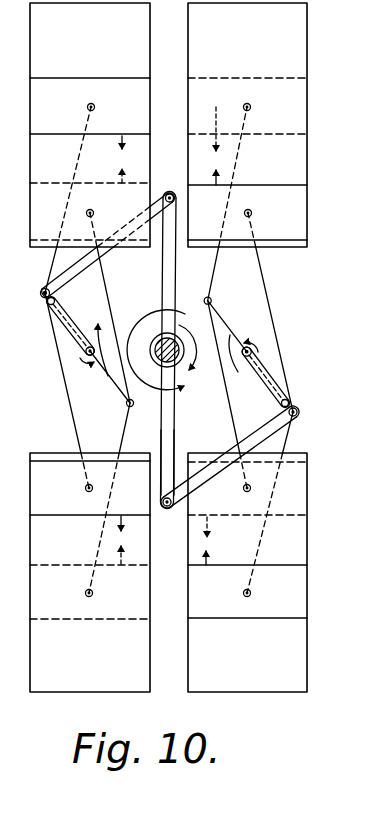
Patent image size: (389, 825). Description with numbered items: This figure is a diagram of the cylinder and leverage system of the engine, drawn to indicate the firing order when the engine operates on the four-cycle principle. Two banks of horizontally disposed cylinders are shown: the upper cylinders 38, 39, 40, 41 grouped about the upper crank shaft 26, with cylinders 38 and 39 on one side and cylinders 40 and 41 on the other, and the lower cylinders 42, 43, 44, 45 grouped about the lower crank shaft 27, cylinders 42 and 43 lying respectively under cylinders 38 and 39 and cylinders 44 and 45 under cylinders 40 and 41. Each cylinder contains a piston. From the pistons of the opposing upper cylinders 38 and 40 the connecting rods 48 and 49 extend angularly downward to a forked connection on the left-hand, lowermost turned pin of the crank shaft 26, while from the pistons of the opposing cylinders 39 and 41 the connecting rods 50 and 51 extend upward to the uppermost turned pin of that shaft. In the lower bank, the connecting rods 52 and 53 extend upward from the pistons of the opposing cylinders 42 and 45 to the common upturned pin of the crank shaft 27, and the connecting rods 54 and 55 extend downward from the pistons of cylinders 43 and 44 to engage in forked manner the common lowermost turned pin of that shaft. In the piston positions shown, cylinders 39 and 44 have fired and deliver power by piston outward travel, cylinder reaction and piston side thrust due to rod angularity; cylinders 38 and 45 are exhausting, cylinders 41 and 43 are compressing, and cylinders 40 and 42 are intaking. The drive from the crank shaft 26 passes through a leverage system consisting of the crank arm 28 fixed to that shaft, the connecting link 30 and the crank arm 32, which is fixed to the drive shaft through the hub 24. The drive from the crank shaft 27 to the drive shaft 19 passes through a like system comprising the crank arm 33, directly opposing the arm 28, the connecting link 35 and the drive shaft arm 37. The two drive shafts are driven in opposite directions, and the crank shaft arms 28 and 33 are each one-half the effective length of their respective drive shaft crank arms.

The drive shaft 19 is at (161, 350).
The hub 24 is at (177, 340).
The crank shaft 26 is at (99, 331).
The crank shaft 27 is at (264, 386).
The crank arm 28 is at (41, 301).
The connecting link 30 is at (73, 272).
The crank arm 32 is at (165, 273).
The crank arm 33 is at (283, 366).
The connecting link 35 is at (272, 423).
The drive shaft arm 37 is at (170, 432).
The upper cylinder 38 is at (90, 488).
The upper cylinder 39 is at (90, 593).
The upper cylinder 40 is at (90, 106).
The upper cylinder 41 is at (90, 211).
The lower cylinder 42 is at (247, 592).
The lower cylinder 43 is at (247, 488).
The lower cylinder 44 is at (247, 106).
The lower cylinder 45 is at (247, 212).
The connecting rod 48 is at (71, 406).
The connecting rod 49 is at (57, 260).
The connecting rod 50 is at (124, 428).
The connecting rod 51 is at (123, 310).
The connecting rod 52 is at (231, 402).
The connecting rod 53 is at (213, 285).
The connecting rod 54 is at (280, 438).
The connecting rod 55 is at (262, 283).